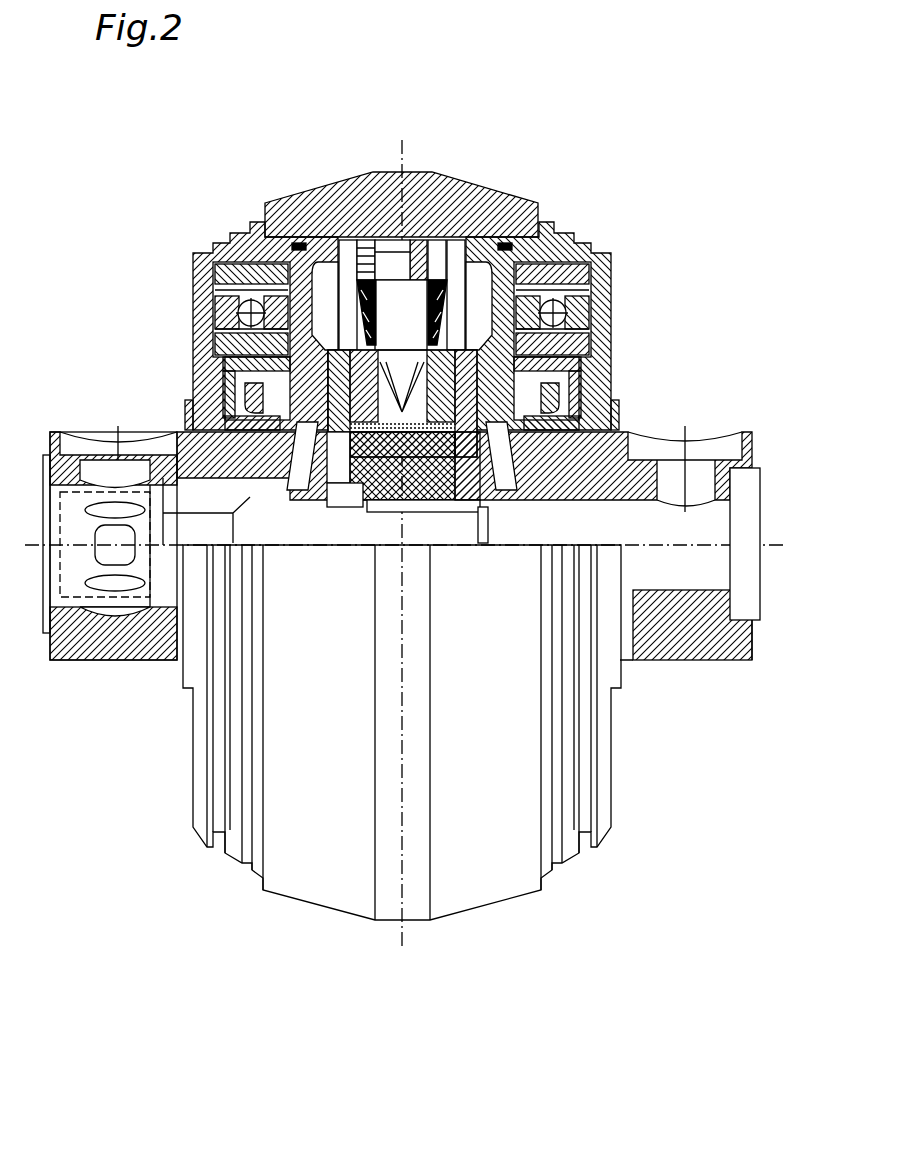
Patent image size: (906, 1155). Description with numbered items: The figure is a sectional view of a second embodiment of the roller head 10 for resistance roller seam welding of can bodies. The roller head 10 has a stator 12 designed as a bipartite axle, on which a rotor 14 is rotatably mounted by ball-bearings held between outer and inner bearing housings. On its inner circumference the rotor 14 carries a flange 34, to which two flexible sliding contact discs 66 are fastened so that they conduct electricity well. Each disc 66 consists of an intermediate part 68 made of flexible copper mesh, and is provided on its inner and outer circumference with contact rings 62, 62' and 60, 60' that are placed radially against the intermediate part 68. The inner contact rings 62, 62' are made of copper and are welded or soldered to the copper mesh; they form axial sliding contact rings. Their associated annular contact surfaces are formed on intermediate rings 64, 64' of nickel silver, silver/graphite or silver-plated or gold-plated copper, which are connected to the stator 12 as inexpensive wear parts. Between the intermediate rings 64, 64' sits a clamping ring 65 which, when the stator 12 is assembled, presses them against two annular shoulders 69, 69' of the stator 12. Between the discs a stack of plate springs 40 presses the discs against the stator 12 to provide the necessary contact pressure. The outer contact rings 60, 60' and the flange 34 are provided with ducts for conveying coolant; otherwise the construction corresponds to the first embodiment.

The roller head 10 is at (618, 235).
The stator 12 is at (627, 432).
The rotor 14 is at (300, 200).
The flange 34 is at (400, 240).
The stack of plate springs 40 is at (392, 358).
The contact ring 60 is at (468, 224).
The contact ring 60' is at (371, 224).
The inner contact ring 62 is at (514, 380).
The inner contact ring 62' is at (407, 519).
The intermediate ring 64 is at (583, 326).
The intermediate ring 64' is at (231, 326).
The clamping ring 65 is at (455, 470).
The disc 66 is at (347, 313).
The intermediate part 68 is at (363, 325).
The annular shoulder 69 is at (507, 514).
The annular shoulder 69' is at (303, 514).